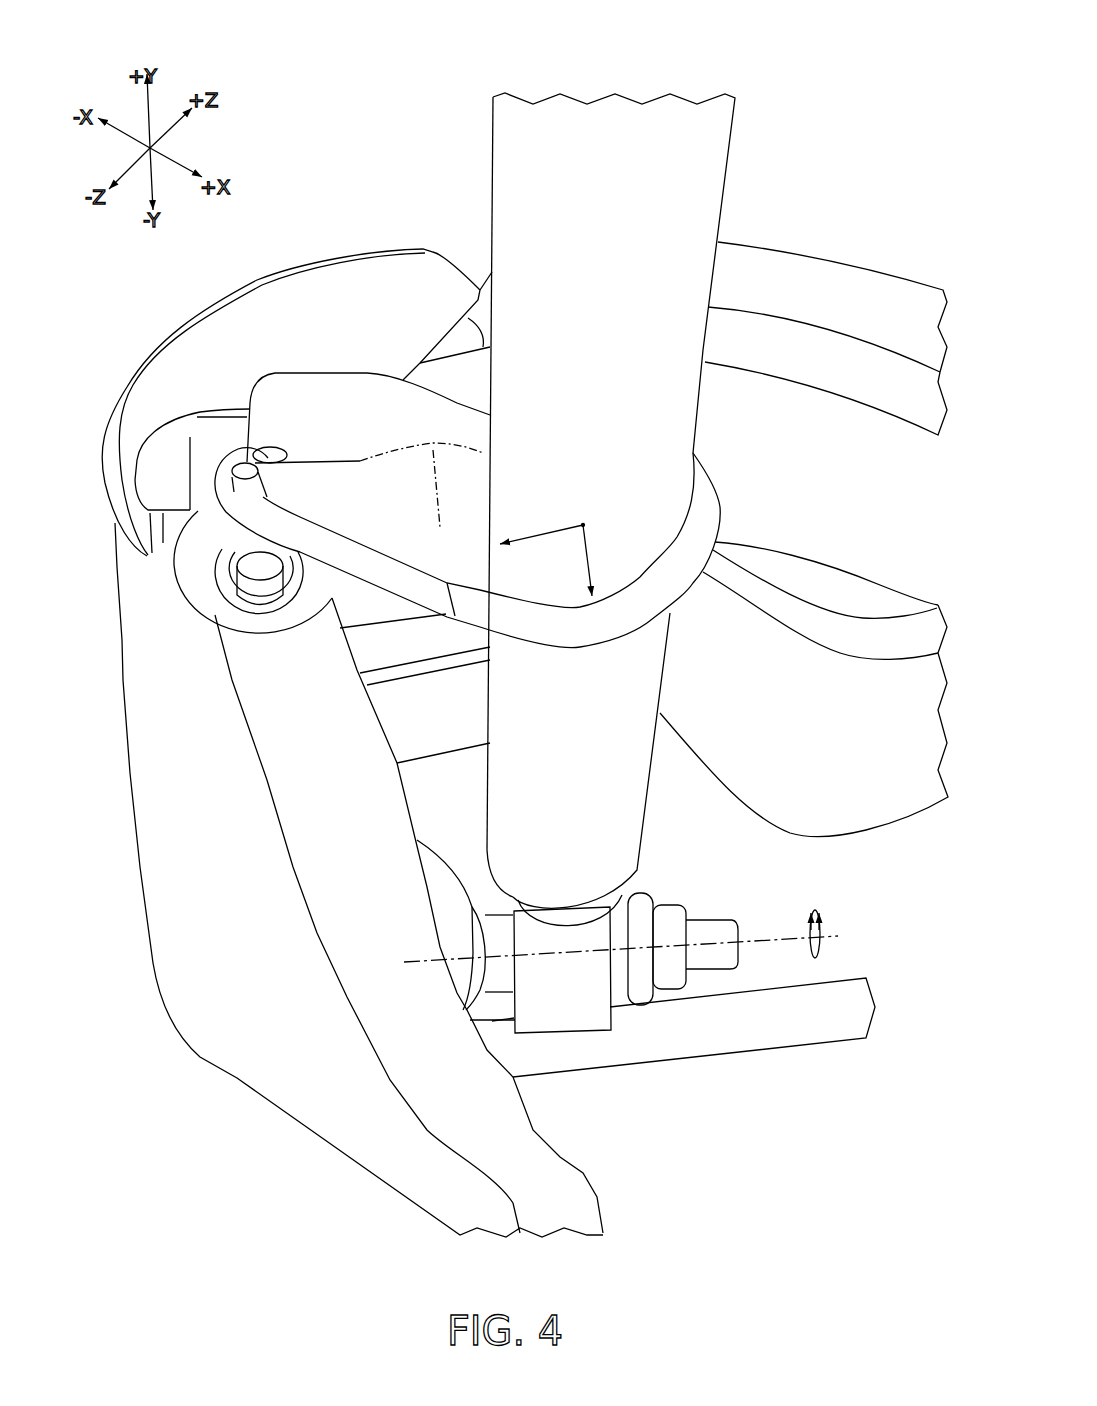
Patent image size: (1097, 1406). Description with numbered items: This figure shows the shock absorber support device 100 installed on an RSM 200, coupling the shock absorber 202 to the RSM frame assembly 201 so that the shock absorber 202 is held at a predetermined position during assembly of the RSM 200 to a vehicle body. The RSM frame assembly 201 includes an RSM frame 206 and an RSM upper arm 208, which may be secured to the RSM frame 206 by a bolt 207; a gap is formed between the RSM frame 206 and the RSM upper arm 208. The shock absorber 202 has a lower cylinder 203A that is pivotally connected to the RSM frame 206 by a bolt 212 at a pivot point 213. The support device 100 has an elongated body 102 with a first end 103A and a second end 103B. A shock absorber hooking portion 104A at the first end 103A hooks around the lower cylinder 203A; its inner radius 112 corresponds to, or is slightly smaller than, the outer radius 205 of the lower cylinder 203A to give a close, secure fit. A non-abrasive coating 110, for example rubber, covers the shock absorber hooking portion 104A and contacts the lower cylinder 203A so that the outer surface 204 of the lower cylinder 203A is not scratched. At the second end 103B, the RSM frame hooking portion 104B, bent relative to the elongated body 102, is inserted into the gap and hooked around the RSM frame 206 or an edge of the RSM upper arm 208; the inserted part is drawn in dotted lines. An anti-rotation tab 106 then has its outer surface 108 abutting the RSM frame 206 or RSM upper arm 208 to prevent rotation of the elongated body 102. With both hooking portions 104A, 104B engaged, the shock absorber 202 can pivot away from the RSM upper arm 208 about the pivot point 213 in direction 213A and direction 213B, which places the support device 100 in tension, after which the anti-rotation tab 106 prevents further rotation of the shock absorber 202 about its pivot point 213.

The RSM 200 is at (804, 418).
The RSM frame assembly 201 is at (297, 347).
The shock absorber 202 is at (570, 480).
The lower cylinder 203A is at (727, 158).
The outer surface 204 is at (493, 178).
The outer radius 205 is at (540, 532).
The RSM frame 206 is at (134, 775).
The bolt 207 is at (262, 609).
The RSM upper arm 208 is at (318, 383).
The shock absorber support device 100 is at (352, 605).
The elongated body 102 is at (423, 603).
The first end 103A is at (563, 668).
The second end 103B is at (228, 578).
The shock absorber hooking portion 104A is at (825, 565).
The RSM frame hooking portion 104B is at (190, 465).
The anti-rotation tab 106 is at (284, 441).
The outer surface 108 is at (271, 493).
The non-abrasive coating 110 is at (716, 481).
The inner radius 112 is at (596, 555).
The bolt 212 is at (737, 931).
The pivot point 213 is at (784, 936).
The direction 213A is at (803, 951).
The direction 213B is at (826, 916).